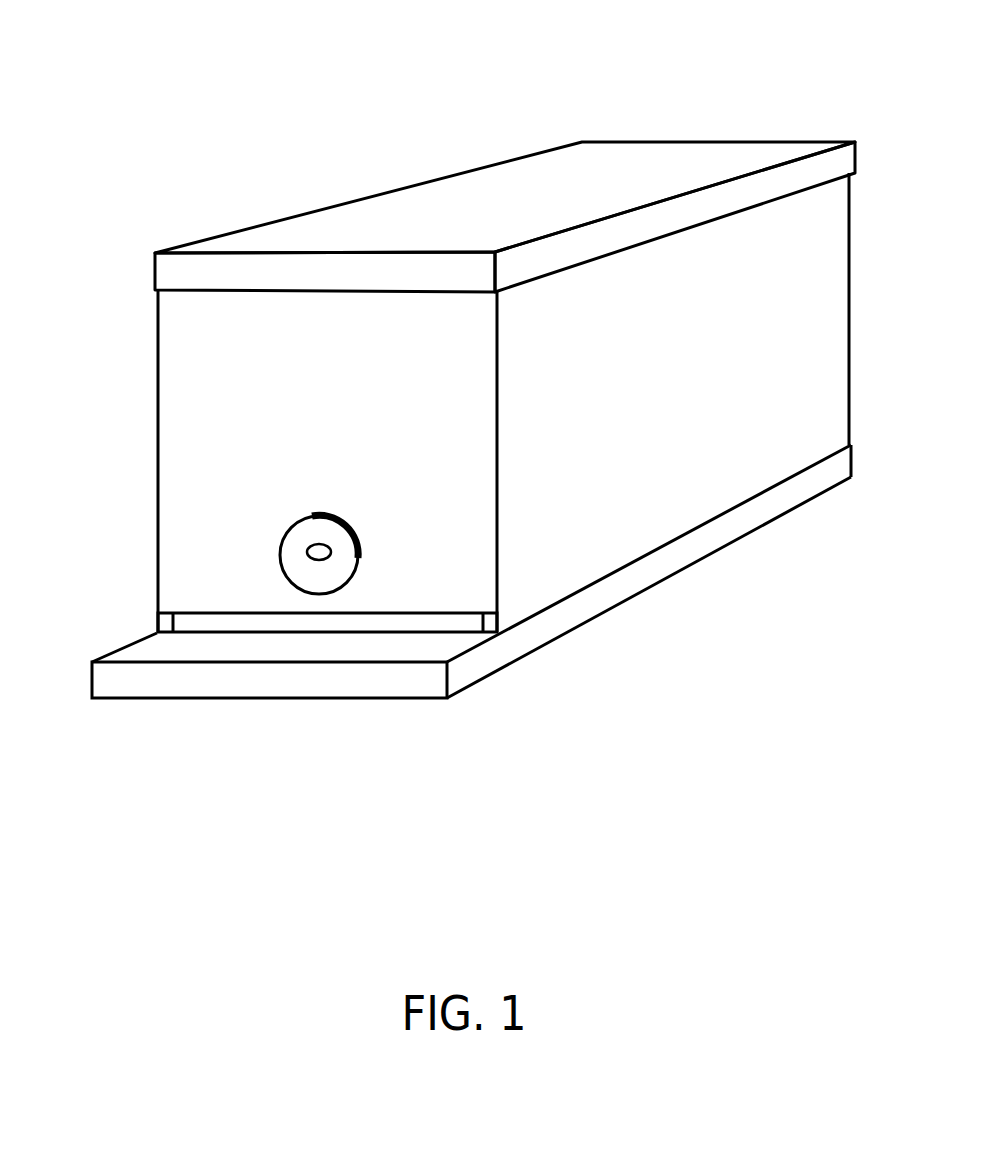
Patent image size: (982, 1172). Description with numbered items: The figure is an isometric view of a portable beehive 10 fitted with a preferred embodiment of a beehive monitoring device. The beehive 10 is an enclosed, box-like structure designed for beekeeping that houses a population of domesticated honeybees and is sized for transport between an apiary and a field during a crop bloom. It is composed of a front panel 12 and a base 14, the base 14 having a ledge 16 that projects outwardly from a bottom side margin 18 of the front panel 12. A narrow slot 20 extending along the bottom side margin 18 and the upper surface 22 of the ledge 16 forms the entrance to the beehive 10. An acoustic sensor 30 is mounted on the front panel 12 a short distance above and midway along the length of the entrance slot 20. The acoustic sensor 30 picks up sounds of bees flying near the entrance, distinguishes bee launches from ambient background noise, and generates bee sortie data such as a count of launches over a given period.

The beehive 10 is at (452, 135).
The front panel 12 is at (195, 423).
The base 14 is at (568, 613).
The ledge 16 is at (400, 680).
The bottom side margin 18 is at (155, 632).
The narrow slot 20 is at (427, 623).
The upper surface 22 is at (427, 643).
The acoustic sensor 30 is at (348, 505).